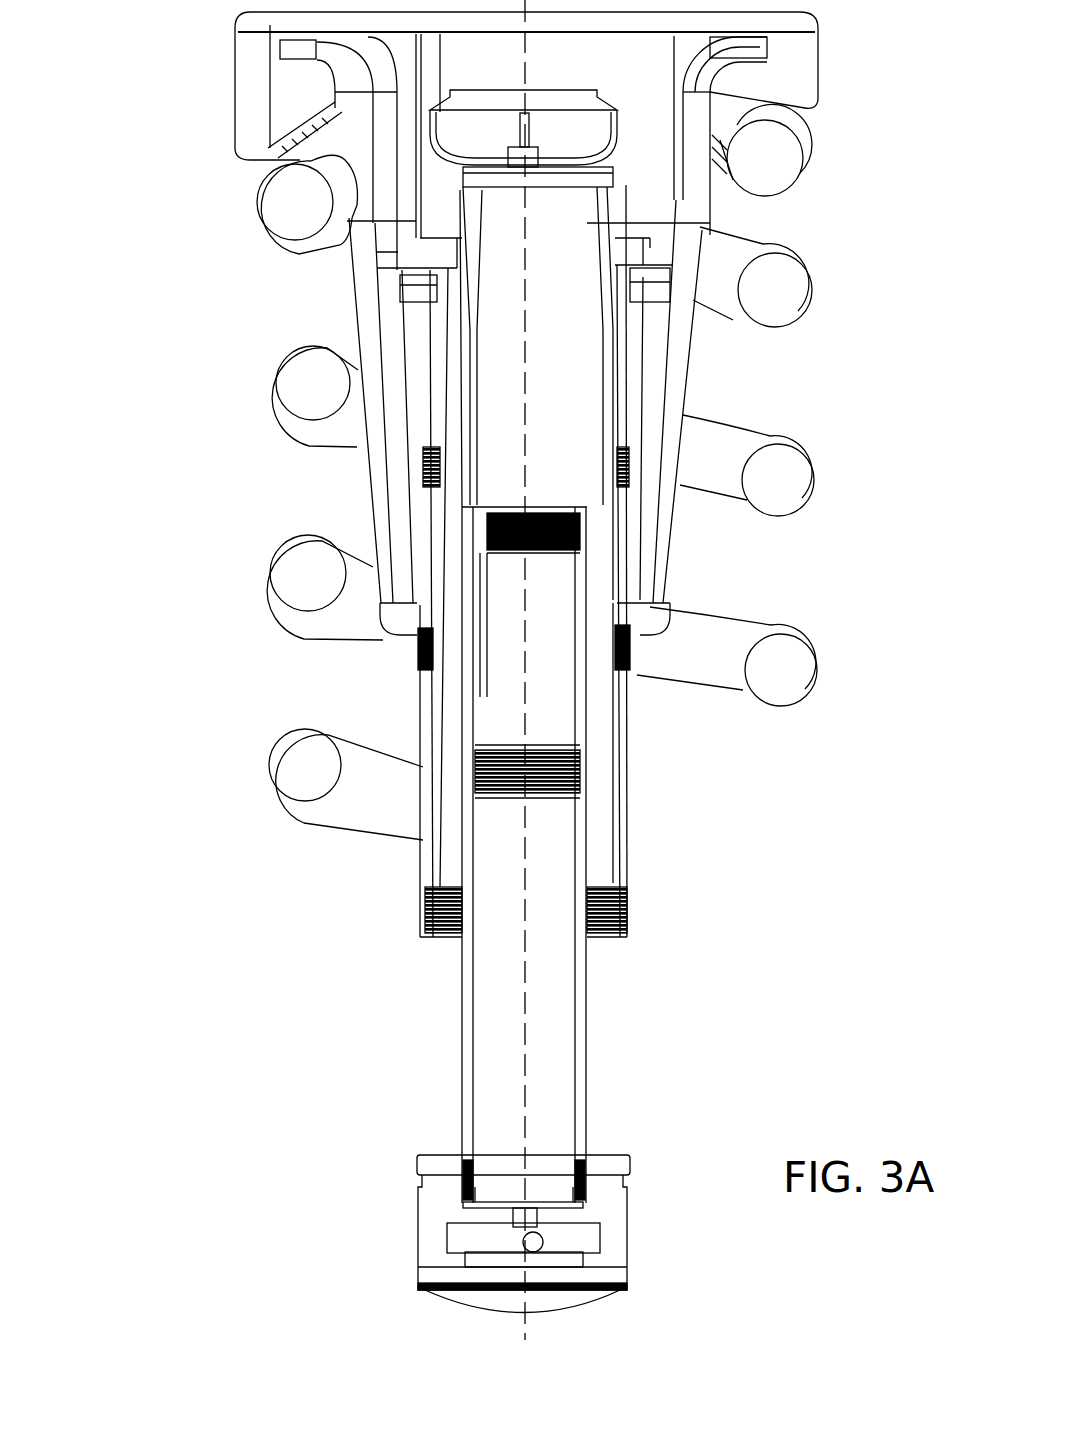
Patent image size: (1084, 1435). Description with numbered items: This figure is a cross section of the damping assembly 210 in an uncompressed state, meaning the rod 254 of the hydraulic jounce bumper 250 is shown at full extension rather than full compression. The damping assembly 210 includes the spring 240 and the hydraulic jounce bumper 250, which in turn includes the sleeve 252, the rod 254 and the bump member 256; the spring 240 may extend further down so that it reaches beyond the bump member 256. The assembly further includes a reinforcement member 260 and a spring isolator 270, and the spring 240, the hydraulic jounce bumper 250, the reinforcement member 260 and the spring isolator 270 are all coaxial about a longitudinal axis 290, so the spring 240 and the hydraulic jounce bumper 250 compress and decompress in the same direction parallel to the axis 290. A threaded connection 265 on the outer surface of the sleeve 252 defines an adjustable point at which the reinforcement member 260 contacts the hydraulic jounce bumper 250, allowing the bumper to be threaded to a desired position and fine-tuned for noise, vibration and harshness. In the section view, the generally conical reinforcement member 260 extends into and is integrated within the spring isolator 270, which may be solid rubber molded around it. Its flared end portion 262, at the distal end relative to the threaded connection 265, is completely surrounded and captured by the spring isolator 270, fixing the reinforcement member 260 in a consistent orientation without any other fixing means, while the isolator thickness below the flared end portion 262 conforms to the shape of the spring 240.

The damping assembly 210 is at (181, 987).
The spring 240 is at (760, 472).
The hydraulic jounce bumper 250 is at (697, 905).
The sleeve 252 is at (620, 857).
The rod 254 is at (560, 1037).
The bump member 256 is at (610, 1203).
The reinforcement member 260 is at (353, 133).
The flared end portion 262 is at (283, 52).
The threaded connection 265 is at (415, 660).
The spring isolator 270 is at (793, 78).
The longitudinal axis 290 is at (523, 1073).